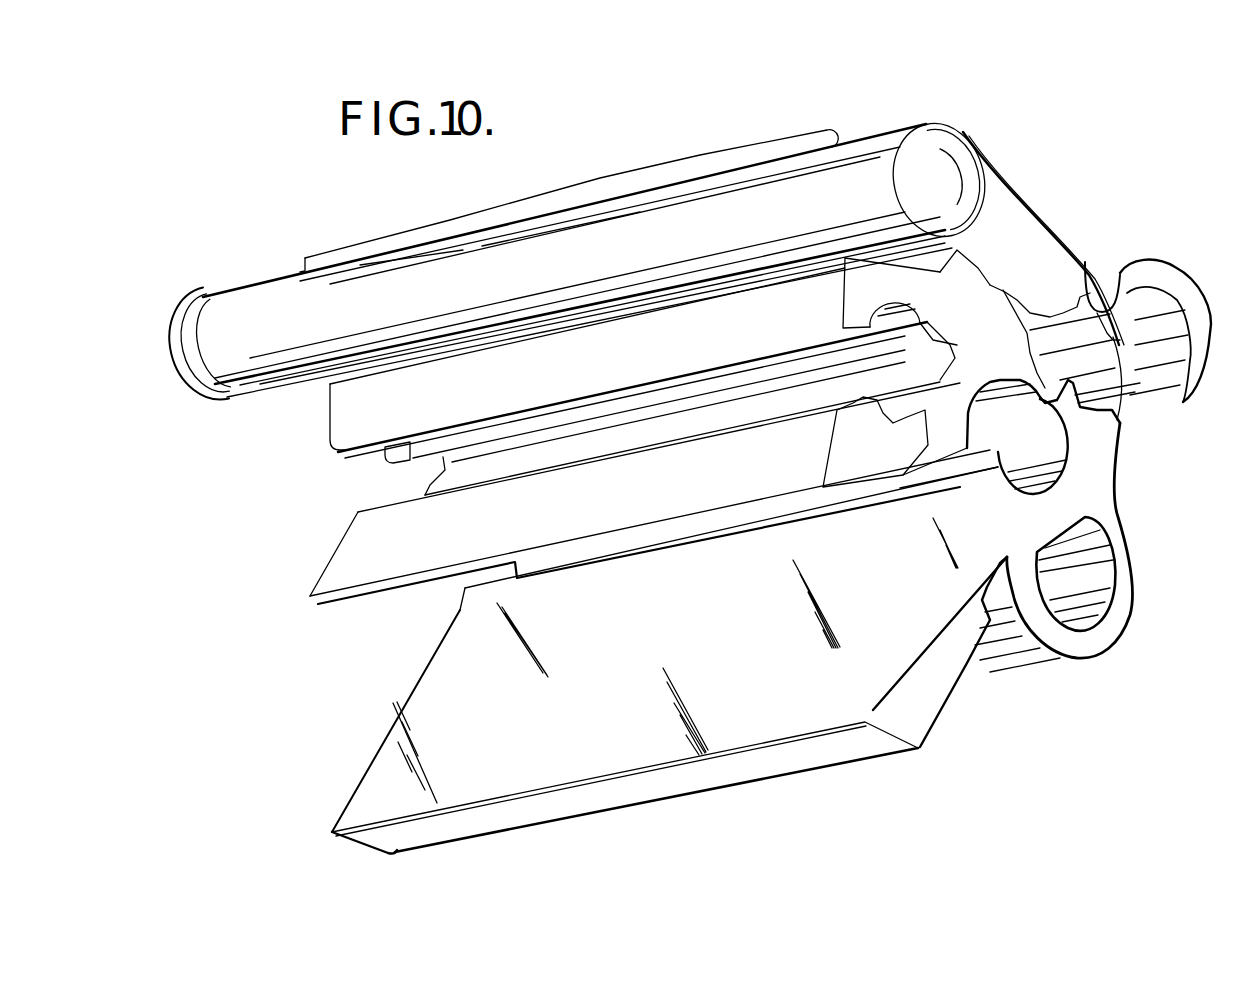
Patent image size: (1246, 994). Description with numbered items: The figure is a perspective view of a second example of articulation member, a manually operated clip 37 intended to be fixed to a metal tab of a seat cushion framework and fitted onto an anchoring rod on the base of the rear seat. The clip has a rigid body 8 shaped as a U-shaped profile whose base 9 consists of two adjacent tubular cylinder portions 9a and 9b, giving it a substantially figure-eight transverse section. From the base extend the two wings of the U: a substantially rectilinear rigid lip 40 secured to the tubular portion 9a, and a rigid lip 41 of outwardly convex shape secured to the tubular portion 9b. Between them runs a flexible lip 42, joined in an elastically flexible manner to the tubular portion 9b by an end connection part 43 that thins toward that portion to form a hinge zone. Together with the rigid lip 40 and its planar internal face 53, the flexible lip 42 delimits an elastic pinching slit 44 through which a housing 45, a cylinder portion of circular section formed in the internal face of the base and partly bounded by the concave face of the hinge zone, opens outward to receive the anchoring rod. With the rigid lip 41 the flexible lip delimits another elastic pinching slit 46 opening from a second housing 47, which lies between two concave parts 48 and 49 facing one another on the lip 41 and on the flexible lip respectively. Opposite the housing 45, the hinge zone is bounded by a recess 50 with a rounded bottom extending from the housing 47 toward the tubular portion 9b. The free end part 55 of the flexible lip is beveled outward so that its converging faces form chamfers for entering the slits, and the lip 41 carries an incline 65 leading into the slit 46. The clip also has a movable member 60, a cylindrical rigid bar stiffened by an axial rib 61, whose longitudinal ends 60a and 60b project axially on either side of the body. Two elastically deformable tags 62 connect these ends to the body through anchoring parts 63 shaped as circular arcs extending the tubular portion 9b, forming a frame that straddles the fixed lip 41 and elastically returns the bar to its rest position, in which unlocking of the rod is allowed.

The manually operated clip 37 is at (1100, 128).
The movable member 60 is at (737, 218).
The longitudinal end of the bar 60a is at (218, 332).
The longitudinal end of the bar 60b is at (927, 163).
The axial rib 61 is at (596, 190).
The elastically deformable tag 62 is at (1007, 230).
The rigid lip 41 is at (962, 262).
The housing 47 is at (990, 273).
The recess 50 is at (1035, 377).
The tubular cylinder portion 9b is at (1093, 297).
The anchoring part 63 is at (1163, 280).
The concave part 48 is at (870, 327).
The incline 65 is at (383, 402).
The elastic pinching slit 46 is at (370, 478).
The concave part 49 is at (867, 403).
The end connection part 43 is at (953, 405).
The housing 45 is at (1017, 438).
The base 9 is at (1083, 478).
The flexible lip 42 is at (927, 445).
The rigid body 8 is at (1140, 562).
The free end part 55 is at (400, 537).
The elastic pinching slit 44 is at (450, 588).
The tubular cylinder portion 9a is at (1103, 633).
The planar internal face 53 is at (458, 725).
The rigid lip 40 is at (917, 700).